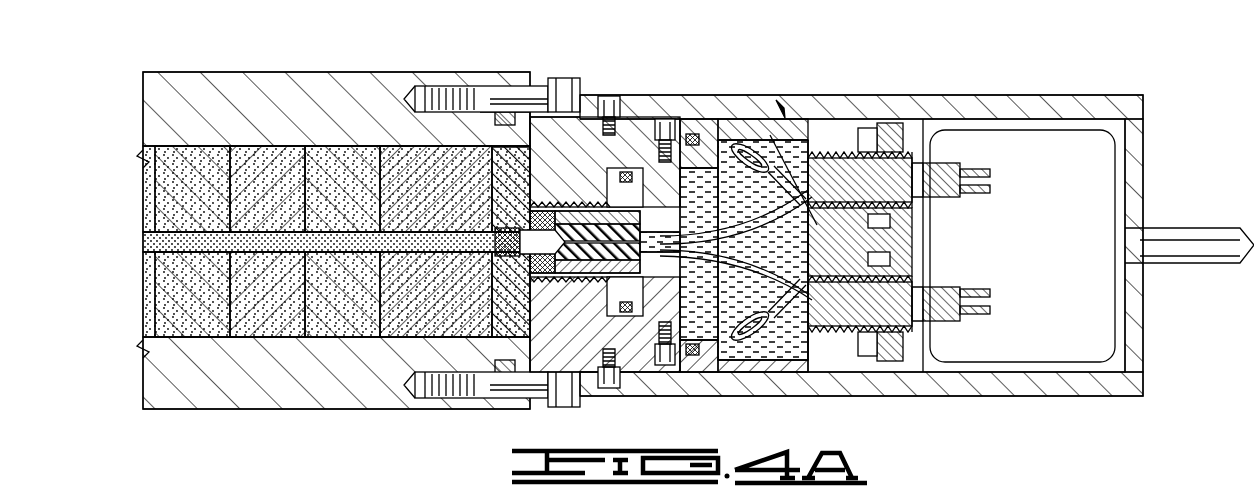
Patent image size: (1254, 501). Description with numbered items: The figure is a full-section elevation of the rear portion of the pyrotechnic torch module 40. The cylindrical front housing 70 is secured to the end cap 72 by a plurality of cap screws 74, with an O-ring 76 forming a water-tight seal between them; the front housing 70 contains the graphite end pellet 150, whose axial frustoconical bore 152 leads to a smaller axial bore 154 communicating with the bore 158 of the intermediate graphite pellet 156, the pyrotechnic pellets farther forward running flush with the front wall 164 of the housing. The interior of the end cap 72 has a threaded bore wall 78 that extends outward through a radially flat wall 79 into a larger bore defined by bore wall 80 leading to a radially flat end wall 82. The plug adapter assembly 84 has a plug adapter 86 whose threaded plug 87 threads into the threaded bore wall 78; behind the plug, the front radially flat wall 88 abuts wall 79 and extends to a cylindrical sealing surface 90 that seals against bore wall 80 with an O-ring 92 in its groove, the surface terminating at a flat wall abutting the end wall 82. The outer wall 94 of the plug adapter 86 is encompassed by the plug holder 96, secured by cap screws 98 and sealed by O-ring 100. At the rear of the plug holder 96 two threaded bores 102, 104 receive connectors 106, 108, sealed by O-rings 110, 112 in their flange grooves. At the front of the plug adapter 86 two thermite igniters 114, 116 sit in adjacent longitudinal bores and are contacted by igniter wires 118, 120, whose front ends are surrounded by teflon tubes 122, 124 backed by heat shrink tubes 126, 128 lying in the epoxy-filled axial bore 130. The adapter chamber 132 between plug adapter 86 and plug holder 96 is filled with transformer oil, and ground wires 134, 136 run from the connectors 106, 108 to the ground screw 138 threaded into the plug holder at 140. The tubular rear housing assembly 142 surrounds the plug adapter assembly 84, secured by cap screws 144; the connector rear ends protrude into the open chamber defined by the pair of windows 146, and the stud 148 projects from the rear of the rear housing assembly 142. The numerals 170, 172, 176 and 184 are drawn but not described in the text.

The pyrotechnic torch module 40 is at (905, 490).
The cylindrical front housing 70 is at (944, 500).
The end cap 72 is at (585, 135).
The cap screws 74 is at (562, 92).
The O-ring 76 is at (518, 98).
The threaded bore wall 78 is at (536, 275).
The radially flat wall 79 is at (628, 180).
The bore wall 80 is at (670, 210).
The radially flat end wall 82 is at (658, 208).
The plug adapter assembly 84 is at (785, 130).
The plug adapter 86 is at (650, 352).
The threaded plug 87 is at (490, 112).
The front radially flat wall 88 is at (562, 150).
The cylindrical sealing surface 90 is at (600, 378).
The O-ring 92 is at (650, 150).
The outer wall 94 is at (682, 320).
The plug holder 96 is at (765, 130).
The cap screws 98 is at (695, 133).
The O-ring 100 is at (705, 160).
The threaded bore 102 is at (850, 130).
The threaded bore 104 is at (850, 340).
The connector 106 is at (896, 135).
The connector 108 is at (890, 278).
The O-ring 110 is at (868, 130).
The O-ring 112 is at (905, 348).
The thermite igniter 114 is at (505, 215).
The thermite igniter 116 is at (455, 310).
The igniter wire 118 is at (772, 300).
The igniter wire 120 is at (722, 330).
The teflon tube 122 is at (505, 110).
The teflon tube 124 is at (505, 374).
The heat shrink tube 126 is at (780, 110).
The heat shrink tube 128 is at (610, 360).
The axial bore 130 is at (805, 200).
The adapter chamber 132 is at (700, 290).
The ground wire 134 is at (900, 175).
The ground wire 136 is at (910, 300).
The ground screw 138 is at (890, 230).
The ground screw threading location 140 is at (890, 255).
The tubular rear housing assembly 142 is at (1043, 100).
The cap screws 144 is at (609, 105).
The windows 146 is at (1100, 163).
The stud 148 is at (1200, 240).
The graphite end pellet 150 is at (478, 300).
The axial frustoconical bore 152 is at (435, 305).
The smaller axial bore 154 is at (490, 180).
The intermediate graphite pellet 156 is at (410, 315).
The bore 158 is at (360, 330).
The front wall 164 is at (480, 500).
The element 170 is at (283, 493).
The element 172 is at (366, 500).
The element 176 is at (548, 500).
The element 184 is at (606, 500).